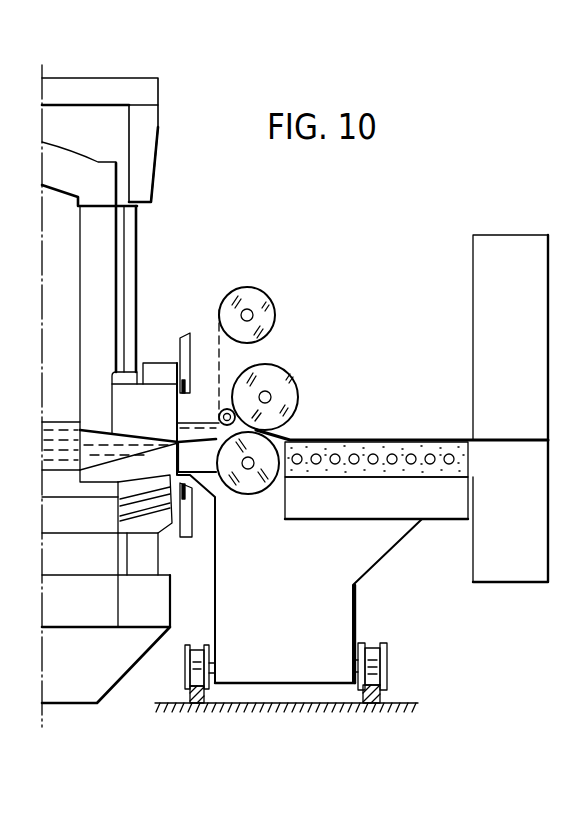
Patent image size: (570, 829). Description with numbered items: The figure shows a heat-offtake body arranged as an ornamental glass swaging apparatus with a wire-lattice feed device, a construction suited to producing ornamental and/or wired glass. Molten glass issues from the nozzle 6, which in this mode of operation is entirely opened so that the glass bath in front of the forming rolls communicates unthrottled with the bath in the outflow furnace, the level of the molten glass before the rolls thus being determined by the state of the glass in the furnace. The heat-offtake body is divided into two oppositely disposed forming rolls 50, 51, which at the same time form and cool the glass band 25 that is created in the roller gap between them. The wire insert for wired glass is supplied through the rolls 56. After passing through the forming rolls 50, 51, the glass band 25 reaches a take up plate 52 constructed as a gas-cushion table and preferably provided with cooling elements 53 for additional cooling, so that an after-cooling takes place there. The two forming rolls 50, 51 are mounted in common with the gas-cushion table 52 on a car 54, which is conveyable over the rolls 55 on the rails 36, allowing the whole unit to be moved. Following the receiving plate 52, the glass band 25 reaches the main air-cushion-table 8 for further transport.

The nozzle 6 is at (177, 404).
The main air-cushion-table 8 is at (514, 567).
The glass band 25 is at (292, 427).
The rails 36 is at (370, 704).
The forming roll 50 is at (250, 481).
The forming roll 51 is at (276, 381).
The take up plate 52 is at (409, 508).
The cooling elements 53 is at (414, 438).
The car 54 is at (285, 662).
The rolls 55 is at (373, 658).
The rolls 56 is at (247, 287).